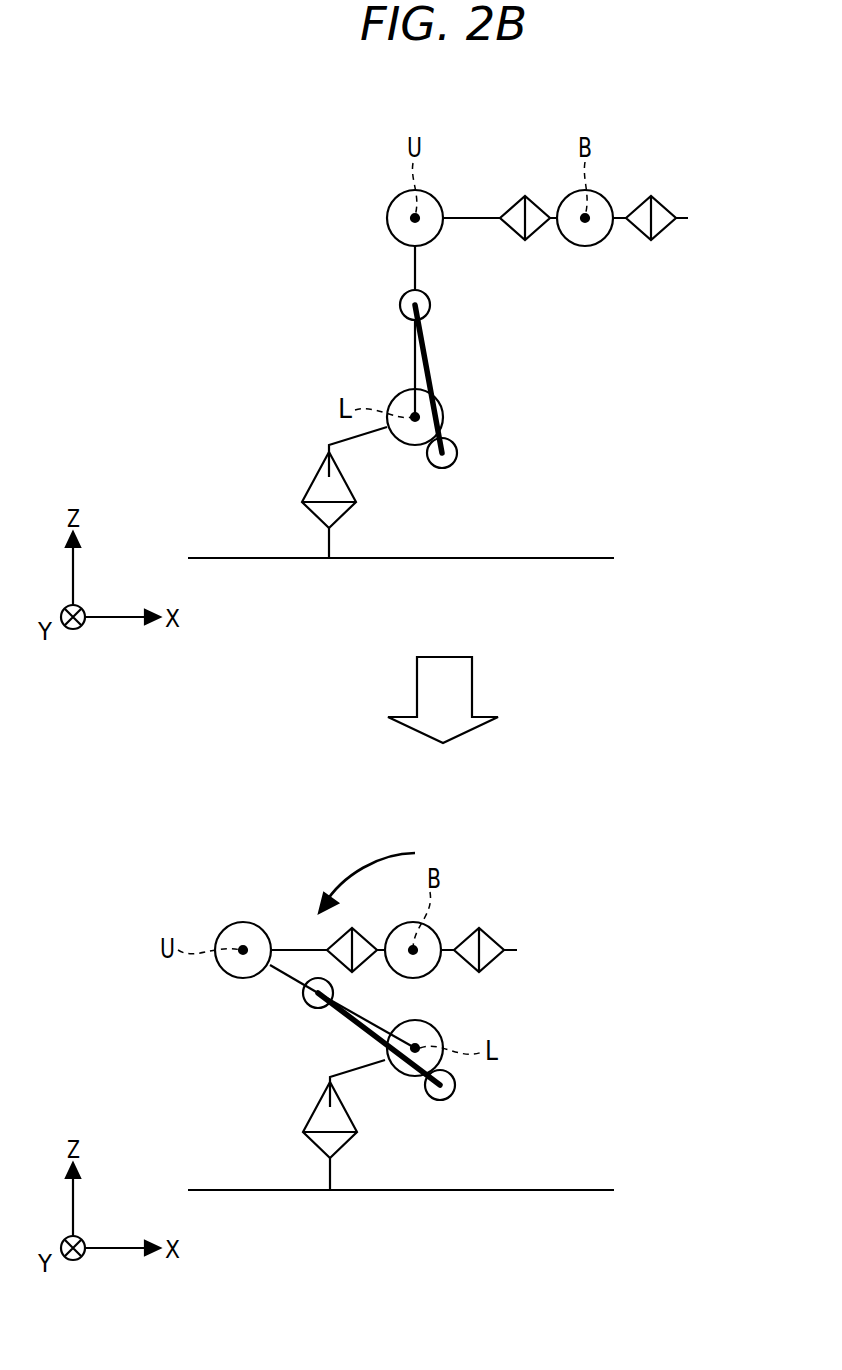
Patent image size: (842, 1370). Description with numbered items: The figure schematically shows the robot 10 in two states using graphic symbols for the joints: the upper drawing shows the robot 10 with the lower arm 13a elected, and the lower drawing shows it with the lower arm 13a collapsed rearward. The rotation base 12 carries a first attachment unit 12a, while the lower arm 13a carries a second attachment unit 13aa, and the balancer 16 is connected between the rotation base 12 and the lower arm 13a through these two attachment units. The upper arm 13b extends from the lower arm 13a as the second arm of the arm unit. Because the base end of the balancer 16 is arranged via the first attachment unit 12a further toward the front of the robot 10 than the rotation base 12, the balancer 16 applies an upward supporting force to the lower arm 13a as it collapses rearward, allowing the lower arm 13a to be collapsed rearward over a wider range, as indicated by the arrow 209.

The robot 10 is at (284, 141).
The rotation base 12 is at (310, 492).
The first attachment unit 12a is at (457, 453).
The lower arm 13a is at (414, 270).
The second attachment unit 13aa is at (430, 305).
The upper arm 13b is at (475, 218).
The balancer 16 is at (431, 358).
The arrow 209 is at (367, 863).